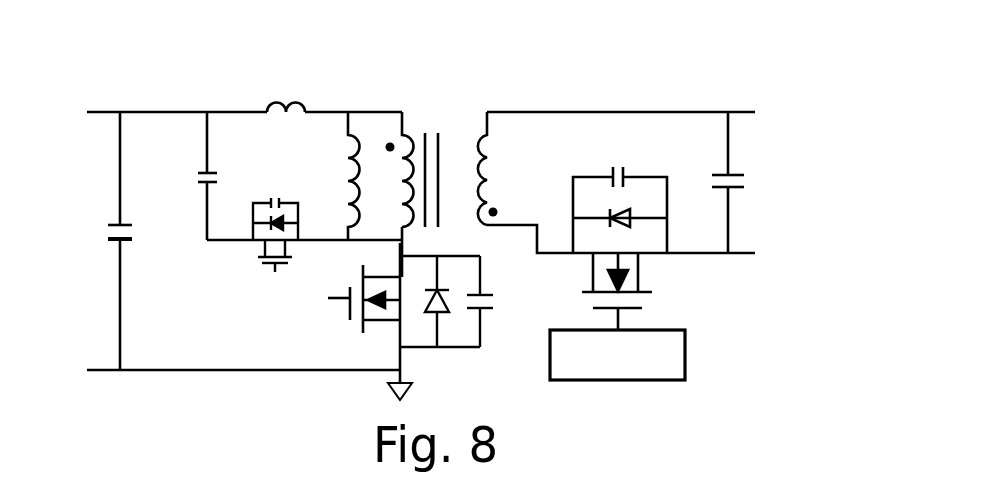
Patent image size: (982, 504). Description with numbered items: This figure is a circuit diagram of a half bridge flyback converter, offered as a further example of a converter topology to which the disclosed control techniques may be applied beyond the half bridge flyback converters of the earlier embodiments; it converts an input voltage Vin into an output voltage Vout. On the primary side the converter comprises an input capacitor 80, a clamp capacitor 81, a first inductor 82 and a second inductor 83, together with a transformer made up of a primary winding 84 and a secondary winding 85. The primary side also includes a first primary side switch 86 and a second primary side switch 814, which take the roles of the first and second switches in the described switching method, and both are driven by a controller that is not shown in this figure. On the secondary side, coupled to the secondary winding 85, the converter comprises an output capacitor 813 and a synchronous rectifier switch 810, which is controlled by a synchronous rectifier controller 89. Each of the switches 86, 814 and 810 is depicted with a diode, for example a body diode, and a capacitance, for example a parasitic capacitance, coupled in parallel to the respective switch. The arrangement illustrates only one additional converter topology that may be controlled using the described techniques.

The input capacitor 80 is at (108, 240).
The clamp capacitor 81 is at (220, 172).
The first inductor 82 is at (303, 103).
The second inductor 83 is at (352, 137).
The primary winding 84 is at (408, 137).
The secondary winding 85 is at (487, 113).
The first primary side switch 86 is at (352, 280).
The synchronous rectifier controller 89 is at (688, 357).
The synchronous rectifier switch 810 is at (633, 310).
The output capacitor 813 is at (739, 189).
The second primary side switch 814 is at (265, 257).